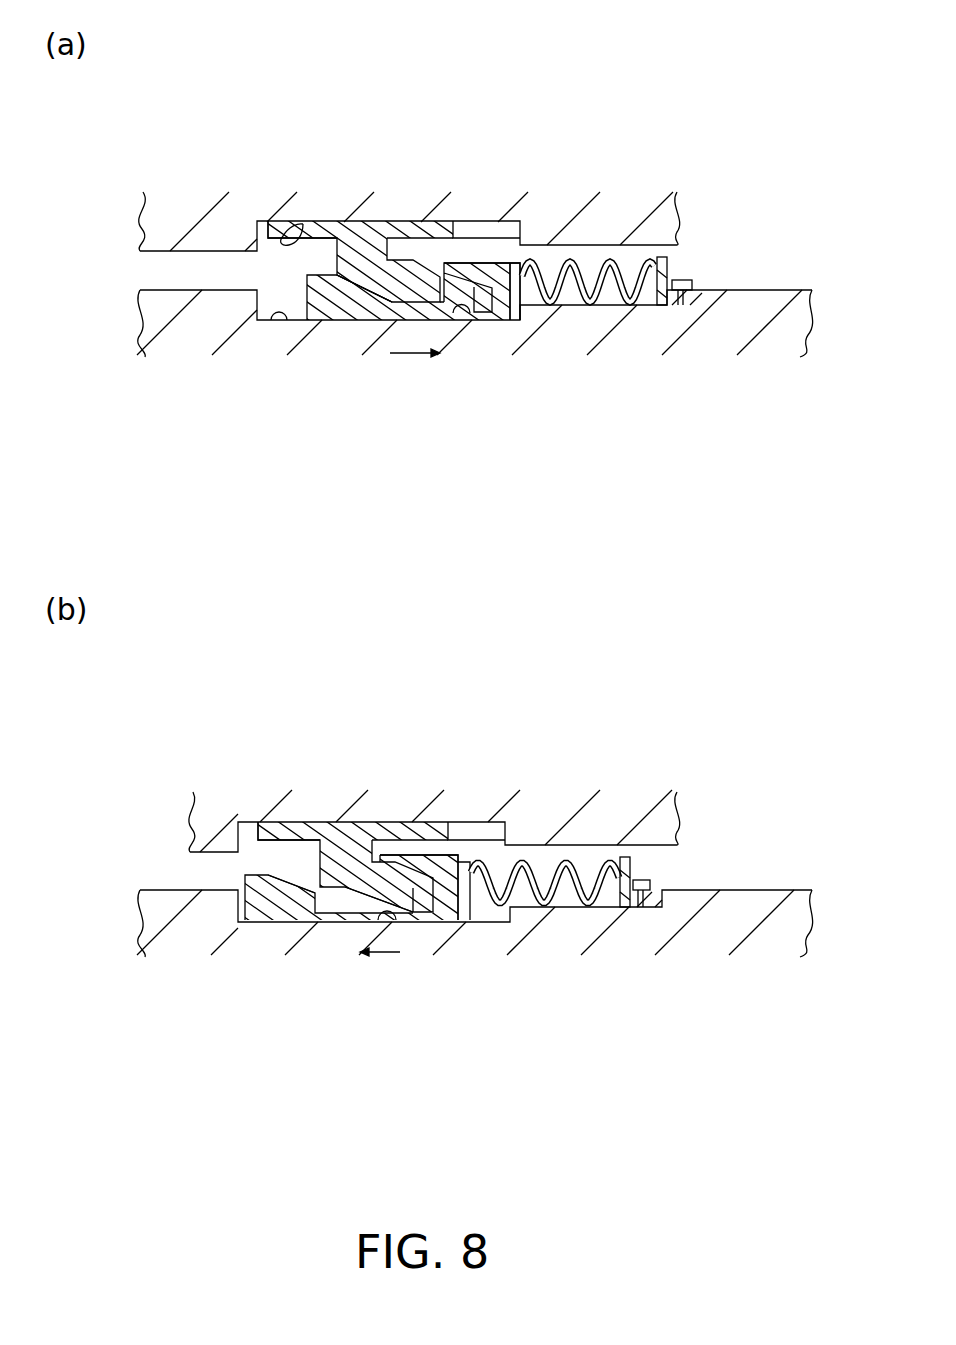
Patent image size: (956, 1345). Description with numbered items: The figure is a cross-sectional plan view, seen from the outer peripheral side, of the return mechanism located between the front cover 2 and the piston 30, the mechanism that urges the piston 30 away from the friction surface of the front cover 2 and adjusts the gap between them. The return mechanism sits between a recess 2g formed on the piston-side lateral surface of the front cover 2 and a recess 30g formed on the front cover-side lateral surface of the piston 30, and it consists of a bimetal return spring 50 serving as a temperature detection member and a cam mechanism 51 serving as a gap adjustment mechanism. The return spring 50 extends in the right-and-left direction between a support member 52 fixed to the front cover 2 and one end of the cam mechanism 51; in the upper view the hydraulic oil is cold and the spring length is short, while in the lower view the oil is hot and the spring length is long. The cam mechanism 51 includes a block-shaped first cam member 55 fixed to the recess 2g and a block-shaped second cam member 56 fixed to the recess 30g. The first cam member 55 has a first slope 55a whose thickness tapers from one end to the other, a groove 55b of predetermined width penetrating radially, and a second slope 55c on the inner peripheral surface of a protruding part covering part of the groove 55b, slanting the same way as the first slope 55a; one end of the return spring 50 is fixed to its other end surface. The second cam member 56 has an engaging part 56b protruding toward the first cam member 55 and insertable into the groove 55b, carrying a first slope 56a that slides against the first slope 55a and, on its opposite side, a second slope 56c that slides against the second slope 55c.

The front cover 2 is at (152, 323).
The recess 2g is at (277, 321).
The piston 30 is at (163, 213).
The recess 30g is at (303, 224).
The return spring 50 is at (612, 284).
The cam mechanism 51 is at (489, 238).
The support member 52 is at (667, 268).
The first cam member 55 is at (337, 323).
The first slope 55a is at (383, 288).
The groove 55b is at (462, 314).
The second slope 55c is at (478, 290).
The second cam member 56 is at (405, 218).
The first slope 56a is at (340, 278).
The engaging part 56b is at (402, 265).
The second slope 56c is at (447, 221).